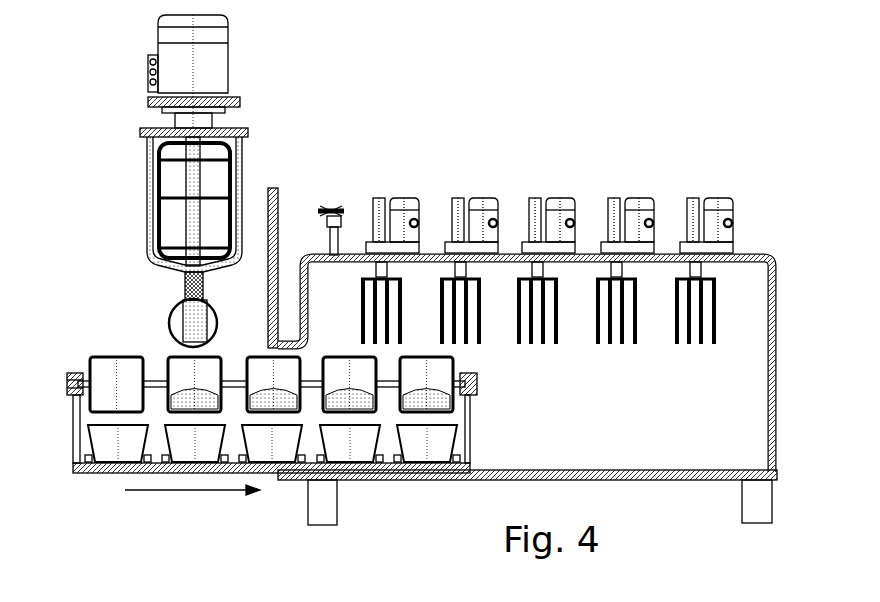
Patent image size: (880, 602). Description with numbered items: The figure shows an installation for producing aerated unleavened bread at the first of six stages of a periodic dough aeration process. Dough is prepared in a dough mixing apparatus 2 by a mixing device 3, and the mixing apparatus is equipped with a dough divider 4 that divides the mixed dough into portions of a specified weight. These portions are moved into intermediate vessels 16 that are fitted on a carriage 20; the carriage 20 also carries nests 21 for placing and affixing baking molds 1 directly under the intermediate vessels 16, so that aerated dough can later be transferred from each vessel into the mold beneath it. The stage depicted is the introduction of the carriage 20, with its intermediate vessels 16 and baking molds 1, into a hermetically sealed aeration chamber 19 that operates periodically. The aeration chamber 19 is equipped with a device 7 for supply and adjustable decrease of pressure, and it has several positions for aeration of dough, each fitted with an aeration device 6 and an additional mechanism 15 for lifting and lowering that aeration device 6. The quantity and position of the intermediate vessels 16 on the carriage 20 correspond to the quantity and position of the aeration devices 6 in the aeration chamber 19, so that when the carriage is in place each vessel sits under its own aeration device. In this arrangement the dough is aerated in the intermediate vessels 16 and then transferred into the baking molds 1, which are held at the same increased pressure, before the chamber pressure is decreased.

The baking molds 1 is at (92, 440).
The dough mixing apparatus 2 is at (150, 165).
The mixing device 3 is at (245, 163).
The dough divider 4 is at (172, 310).
The aeration device 6 is at (402, 297).
The device for supply and adjustable decrease of pressure 7 is at (343, 180).
The mechanisms for lifting and lowering the aeration device 15 is at (382, 197).
The intermediate vessels 16 is at (95, 352).
The aeration chamber 19 is at (773, 252).
The carriage 20 is at (78, 417).
The nests 21 is at (87, 472).